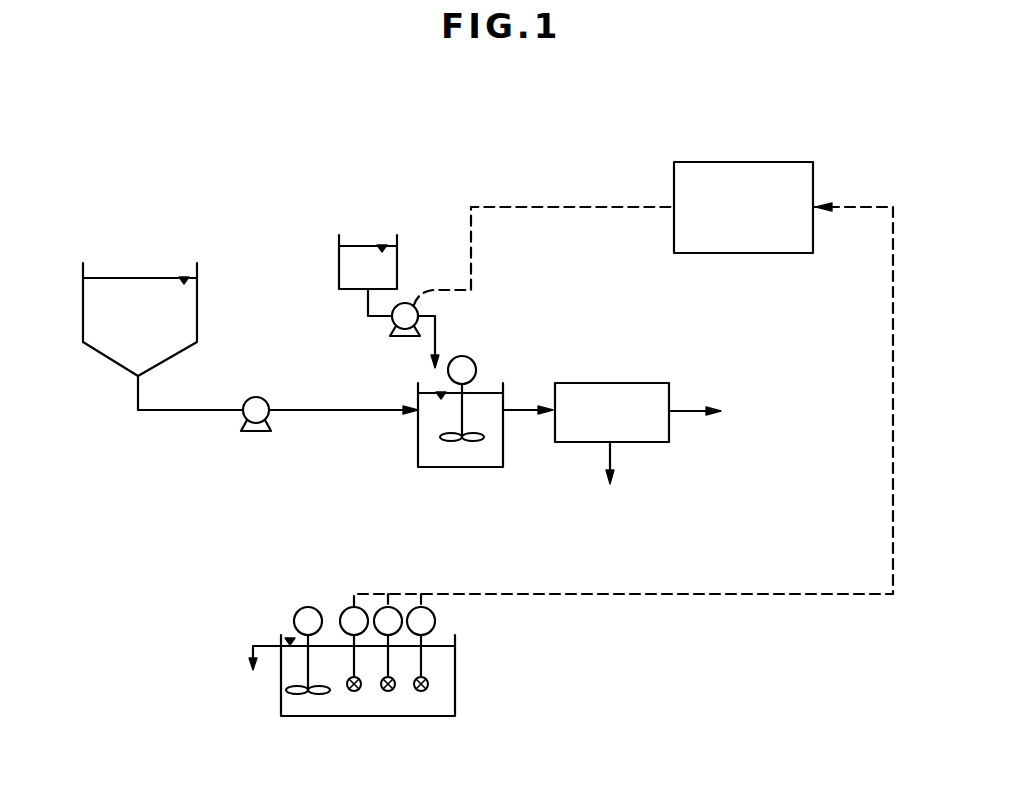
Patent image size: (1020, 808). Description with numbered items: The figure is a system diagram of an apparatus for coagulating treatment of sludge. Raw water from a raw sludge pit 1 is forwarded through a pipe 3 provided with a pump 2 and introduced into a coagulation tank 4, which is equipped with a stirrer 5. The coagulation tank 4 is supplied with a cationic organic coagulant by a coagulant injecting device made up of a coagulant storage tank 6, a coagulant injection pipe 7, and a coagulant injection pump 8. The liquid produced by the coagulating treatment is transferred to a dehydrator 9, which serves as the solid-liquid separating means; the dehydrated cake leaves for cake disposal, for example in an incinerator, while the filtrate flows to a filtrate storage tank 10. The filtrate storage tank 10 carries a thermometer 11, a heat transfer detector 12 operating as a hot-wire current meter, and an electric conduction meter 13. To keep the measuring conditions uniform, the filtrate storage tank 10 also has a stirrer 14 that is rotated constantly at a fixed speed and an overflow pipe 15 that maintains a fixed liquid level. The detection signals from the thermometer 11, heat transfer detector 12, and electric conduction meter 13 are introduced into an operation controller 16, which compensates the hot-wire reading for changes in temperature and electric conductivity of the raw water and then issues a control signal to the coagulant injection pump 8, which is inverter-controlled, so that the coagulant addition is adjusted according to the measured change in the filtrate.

The raw sludge pit 1 is at (197, 302).
The pump 2 is at (256, 397).
The pipe 3 is at (320, 411).
The coagulation tank 4 is at (418, 447).
The stirrer 5 is at (462, 356).
The coagulant storage tank 6 is at (339, 262).
The coagulant injection pipe 7 is at (368, 300).
The coagulant injection pump 8 is at (400, 338).
The dehydrator 9 is at (621, 383).
The filtrate storage tank 10 is at (410, 716).
The thermometer 11 is at (354, 649).
The heat transfer detector 12 is at (388, 649).
The electric conduction meter 13 is at (421, 649).
The stirrer 14 is at (308, 607).
The overflow pipe 15 is at (270, 642).
The operation controller 16 is at (752, 162).